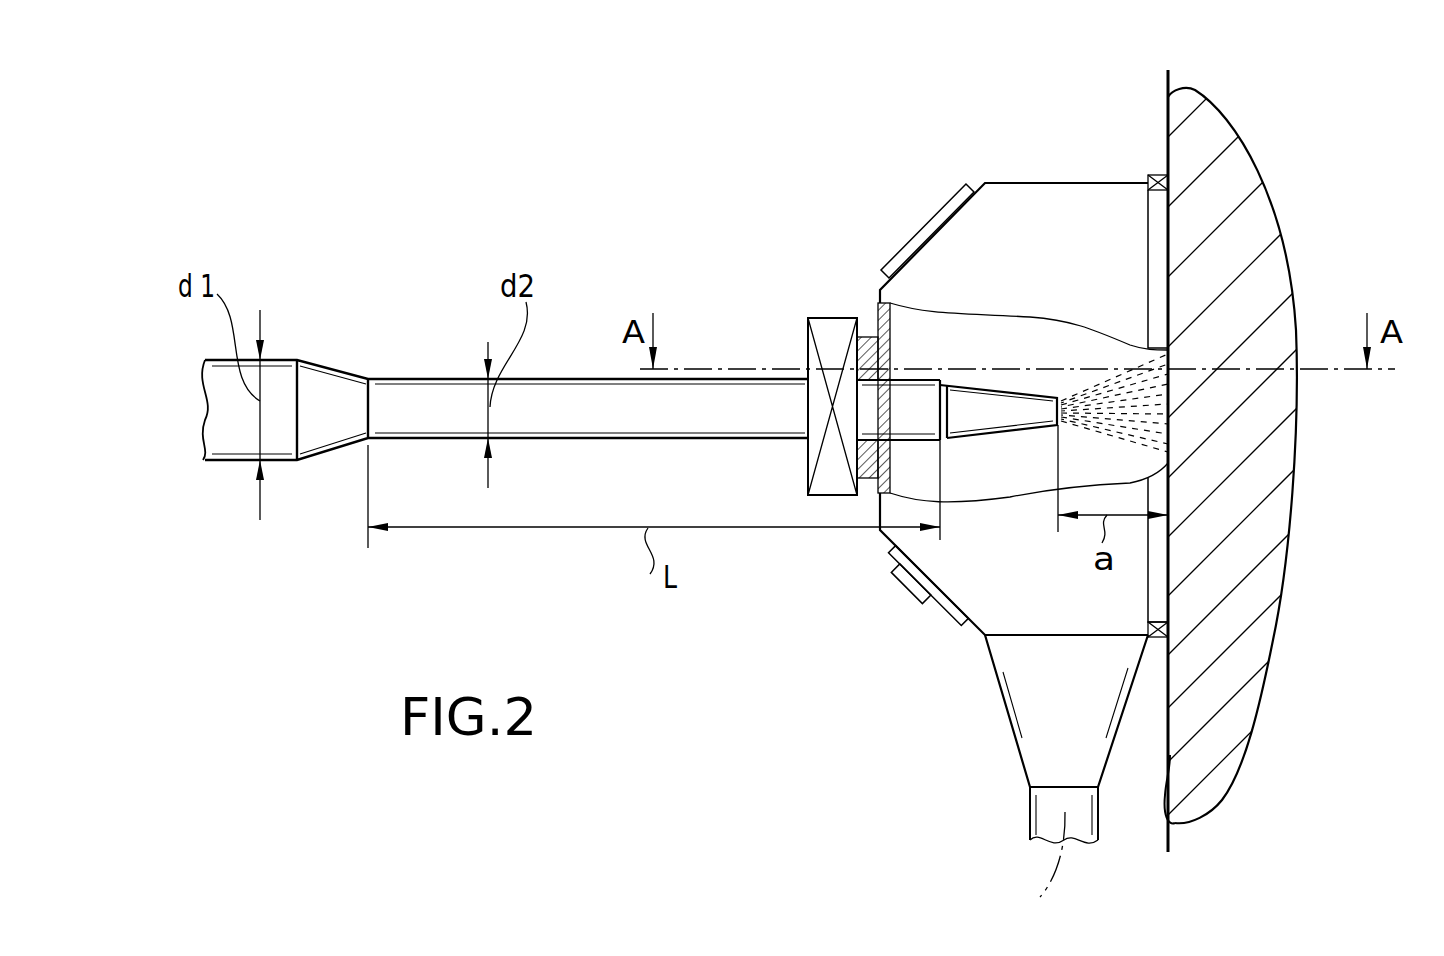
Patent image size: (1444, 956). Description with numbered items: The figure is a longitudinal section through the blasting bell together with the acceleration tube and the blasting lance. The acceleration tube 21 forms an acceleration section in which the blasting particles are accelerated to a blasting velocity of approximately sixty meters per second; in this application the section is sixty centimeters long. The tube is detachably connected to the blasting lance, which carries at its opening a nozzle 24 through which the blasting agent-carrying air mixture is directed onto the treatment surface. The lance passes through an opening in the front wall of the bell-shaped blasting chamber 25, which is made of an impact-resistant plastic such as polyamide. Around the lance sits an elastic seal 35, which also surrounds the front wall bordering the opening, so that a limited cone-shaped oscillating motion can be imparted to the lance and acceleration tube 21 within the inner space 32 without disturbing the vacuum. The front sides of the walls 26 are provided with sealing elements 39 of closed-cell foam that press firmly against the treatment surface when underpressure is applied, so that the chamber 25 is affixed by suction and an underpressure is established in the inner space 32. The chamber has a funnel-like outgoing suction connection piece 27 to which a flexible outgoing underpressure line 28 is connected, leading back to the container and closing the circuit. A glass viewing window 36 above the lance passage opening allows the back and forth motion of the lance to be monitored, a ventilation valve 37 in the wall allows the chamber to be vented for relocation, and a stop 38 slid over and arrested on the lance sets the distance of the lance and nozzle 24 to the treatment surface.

The acceleration tube 21 is at (393, 378).
The nozzle 24 is at (1008, 413).
The blasting chamber 25 is at (1011, 140).
The walls 26 is at (1105, 183).
The outgoing suction connection piece 27 is at (1005, 727).
The outgoing underpressure line 28 is at (1028, 812).
The inner space 32 is at (925, 340).
The seal 35 is at (866, 330).
The viewing window 36 is at (938, 208).
The ventilation valve 37 is at (914, 589).
The stop 38 is at (815, 318).
The sealing elements 39 is at (1160, 228).